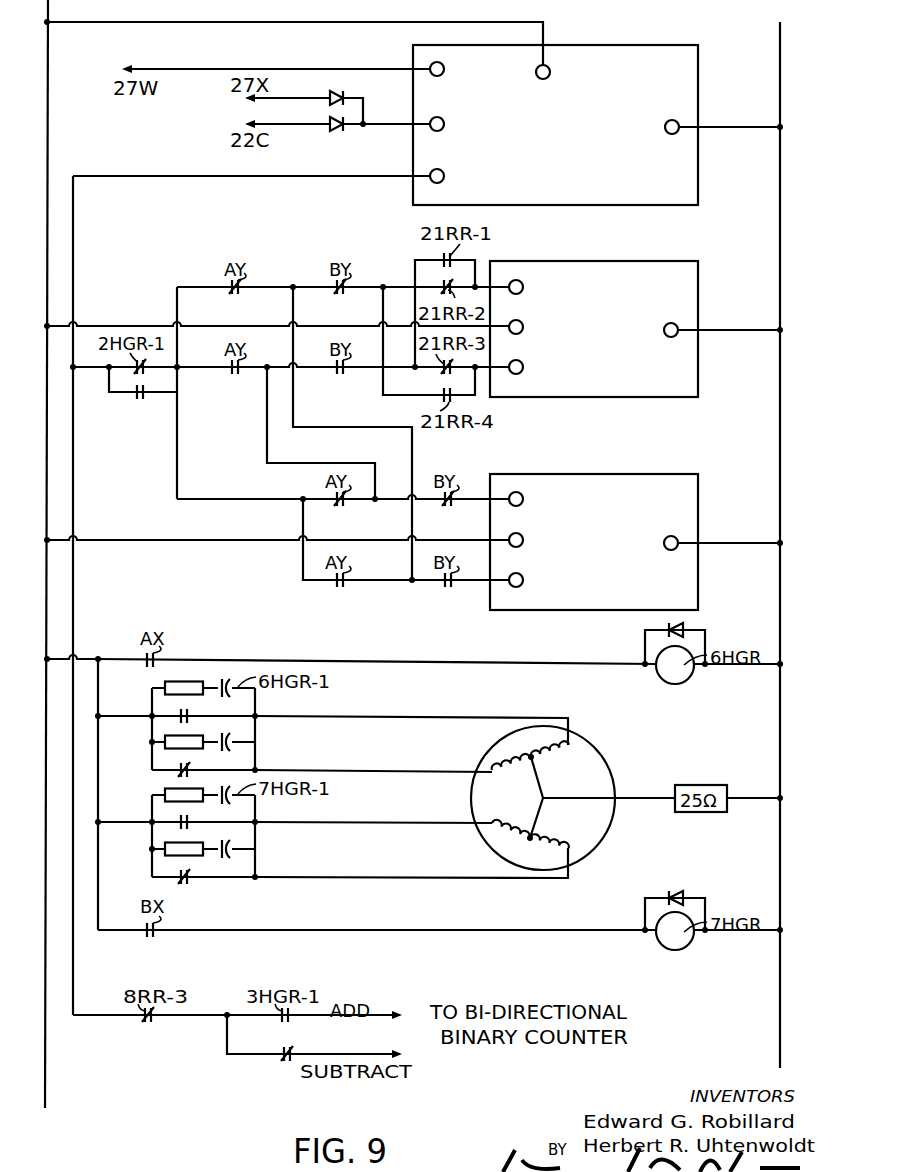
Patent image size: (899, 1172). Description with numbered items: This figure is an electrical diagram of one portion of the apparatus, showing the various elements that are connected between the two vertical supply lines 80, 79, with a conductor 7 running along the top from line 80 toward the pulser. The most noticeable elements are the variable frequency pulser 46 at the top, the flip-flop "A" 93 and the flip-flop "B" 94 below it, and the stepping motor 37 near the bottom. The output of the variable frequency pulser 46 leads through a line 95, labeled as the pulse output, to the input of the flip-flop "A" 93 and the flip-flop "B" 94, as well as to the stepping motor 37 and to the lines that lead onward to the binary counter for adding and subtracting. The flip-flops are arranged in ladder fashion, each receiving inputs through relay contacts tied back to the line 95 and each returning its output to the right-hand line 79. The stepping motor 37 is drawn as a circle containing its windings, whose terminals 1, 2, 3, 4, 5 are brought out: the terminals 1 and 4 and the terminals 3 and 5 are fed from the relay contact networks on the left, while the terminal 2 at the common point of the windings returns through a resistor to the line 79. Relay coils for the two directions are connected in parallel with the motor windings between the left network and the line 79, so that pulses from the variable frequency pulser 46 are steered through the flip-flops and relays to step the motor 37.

The supply line 7 is at (293, 42).
The line 80 is at (47, 57).
The line 79 is at (781, 73).
The variable frequency pulser 46 is at (612, 55).
The line 95 is at (321, 178).
The flip-flop "A" 93 is at (600, 272).
The flip-flop "B" 94 is at (603, 485).
The stepping motor 37 is at (573, 798).
The motor winding terminal 1 is at (558, 753).
The motor winding terminal 2 is at (609, 790).
The motor winding terminal 3 is at (506, 775).
The motor winding terminal 4 is at (560, 845).
The motor winding terminal 5 is at (507, 818).